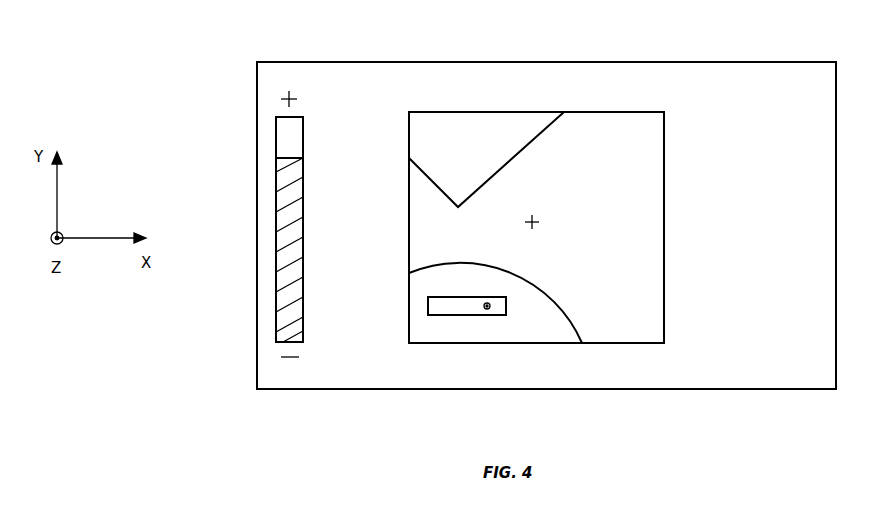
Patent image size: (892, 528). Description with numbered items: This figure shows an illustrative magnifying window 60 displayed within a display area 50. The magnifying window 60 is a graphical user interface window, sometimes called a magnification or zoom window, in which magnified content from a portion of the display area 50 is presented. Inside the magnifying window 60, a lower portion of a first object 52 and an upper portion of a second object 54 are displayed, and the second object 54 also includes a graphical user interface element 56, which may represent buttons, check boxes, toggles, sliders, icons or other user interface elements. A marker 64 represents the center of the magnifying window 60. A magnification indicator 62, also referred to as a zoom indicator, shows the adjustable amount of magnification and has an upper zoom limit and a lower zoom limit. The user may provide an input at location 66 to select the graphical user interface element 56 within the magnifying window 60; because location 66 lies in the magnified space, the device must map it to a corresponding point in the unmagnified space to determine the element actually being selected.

The display area 50 is at (804, 72).
The first object 52 is at (513, 127).
The second object 54 is at (552, 323).
The graphical user interface element 56 is at (445, 296).
The magnifying window 60 is at (665, 207).
The magnification indicator 62 is at (270, 290).
The marker 64 is at (549, 205).
The location 66 is at (488, 310).